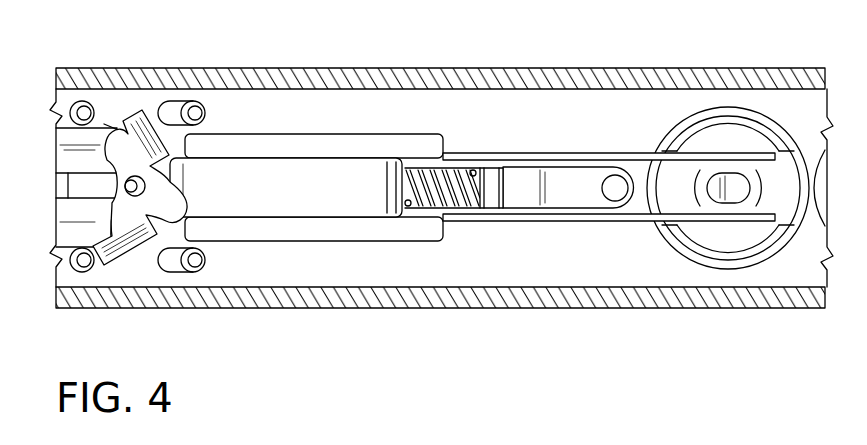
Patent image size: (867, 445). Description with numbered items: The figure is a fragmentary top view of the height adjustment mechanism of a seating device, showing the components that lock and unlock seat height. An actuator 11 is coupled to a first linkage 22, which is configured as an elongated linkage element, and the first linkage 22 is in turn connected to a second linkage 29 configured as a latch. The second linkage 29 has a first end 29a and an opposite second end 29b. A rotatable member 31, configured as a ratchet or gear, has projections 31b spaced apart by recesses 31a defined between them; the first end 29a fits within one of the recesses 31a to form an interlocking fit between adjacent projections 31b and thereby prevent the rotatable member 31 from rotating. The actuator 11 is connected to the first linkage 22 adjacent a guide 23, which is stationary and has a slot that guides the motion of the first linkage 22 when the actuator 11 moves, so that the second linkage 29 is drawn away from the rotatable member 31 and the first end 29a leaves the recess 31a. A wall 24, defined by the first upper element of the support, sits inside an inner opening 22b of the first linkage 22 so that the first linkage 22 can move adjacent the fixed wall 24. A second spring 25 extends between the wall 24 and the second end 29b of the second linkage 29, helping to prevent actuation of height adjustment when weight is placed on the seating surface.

The actuator 11 is at (722, 142).
The first linkage 22 is at (570, 160).
The inner opening 22b is at (567, 200).
The guide 23 is at (718, 195).
The wall 24 is at (490, 203).
The second spring 25 is at (450, 170).
The second linkage 29 is at (283, 205).
The first end 29a is at (195, 157).
The second end 29b is at (410, 168).
The rotatable member 31 is at (105, 123).
The recesses 31a is at (150, 105).
The projections 31b is at (105, 250).